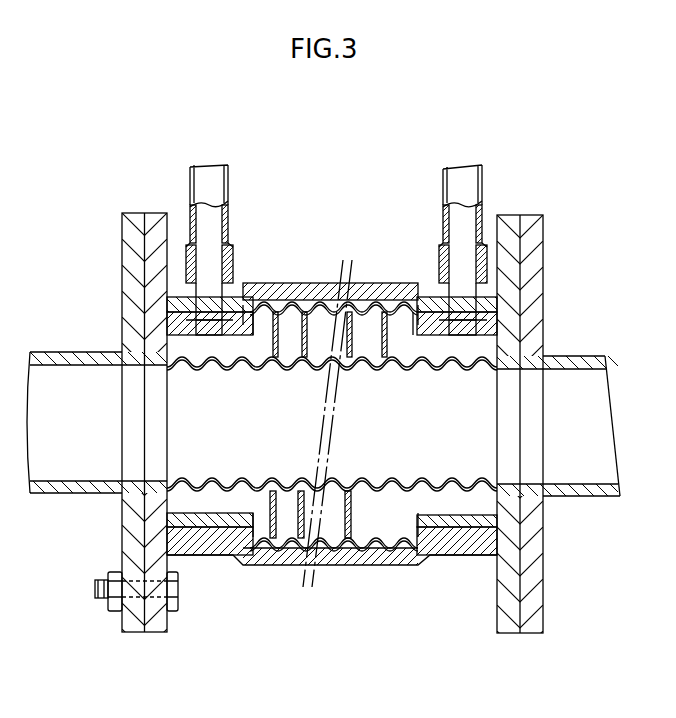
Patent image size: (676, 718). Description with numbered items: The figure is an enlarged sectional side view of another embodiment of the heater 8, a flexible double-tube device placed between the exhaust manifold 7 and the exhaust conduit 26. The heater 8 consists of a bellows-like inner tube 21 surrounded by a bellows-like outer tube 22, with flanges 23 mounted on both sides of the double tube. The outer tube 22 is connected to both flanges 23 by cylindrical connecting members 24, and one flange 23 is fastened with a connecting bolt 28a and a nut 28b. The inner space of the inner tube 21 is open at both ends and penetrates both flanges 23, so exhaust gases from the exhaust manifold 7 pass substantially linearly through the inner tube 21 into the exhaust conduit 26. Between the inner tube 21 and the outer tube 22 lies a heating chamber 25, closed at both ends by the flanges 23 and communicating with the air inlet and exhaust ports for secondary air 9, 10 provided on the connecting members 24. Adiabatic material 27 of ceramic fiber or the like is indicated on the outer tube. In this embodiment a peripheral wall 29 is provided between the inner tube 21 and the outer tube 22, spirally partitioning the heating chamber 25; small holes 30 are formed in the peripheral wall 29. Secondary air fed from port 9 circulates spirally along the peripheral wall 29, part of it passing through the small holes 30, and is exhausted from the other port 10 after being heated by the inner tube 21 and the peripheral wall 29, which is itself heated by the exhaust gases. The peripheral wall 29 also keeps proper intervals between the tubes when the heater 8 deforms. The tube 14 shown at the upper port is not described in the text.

The exhaust manifold 7 is at (578, 495).
The heater 8 is at (327, 572).
The air inlet and exhaust port for secondary air 9 is at (232, 285).
The air inlet and exhaust port for secondary air 10 is at (442, 290).
The tube 14 is at (455, 192).
The inner tube 21 is at (190, 478).
The outer tube 22 is at (280, 540).
The flange 23 is at (157, 213).
The connecting member 24 is at (213, 553).
The heating chamber 25 is at (397, 527).
The exhaust conduit 26 is at (62, 494).
The adiabatic material 27 is at (300, 283).
The connecting bolt 28a is at (107, 598).
The nut 28b is at (113, 611).
The peripheral wall 29 is at (348, 530).
The small holes 30 is at (372, 322).